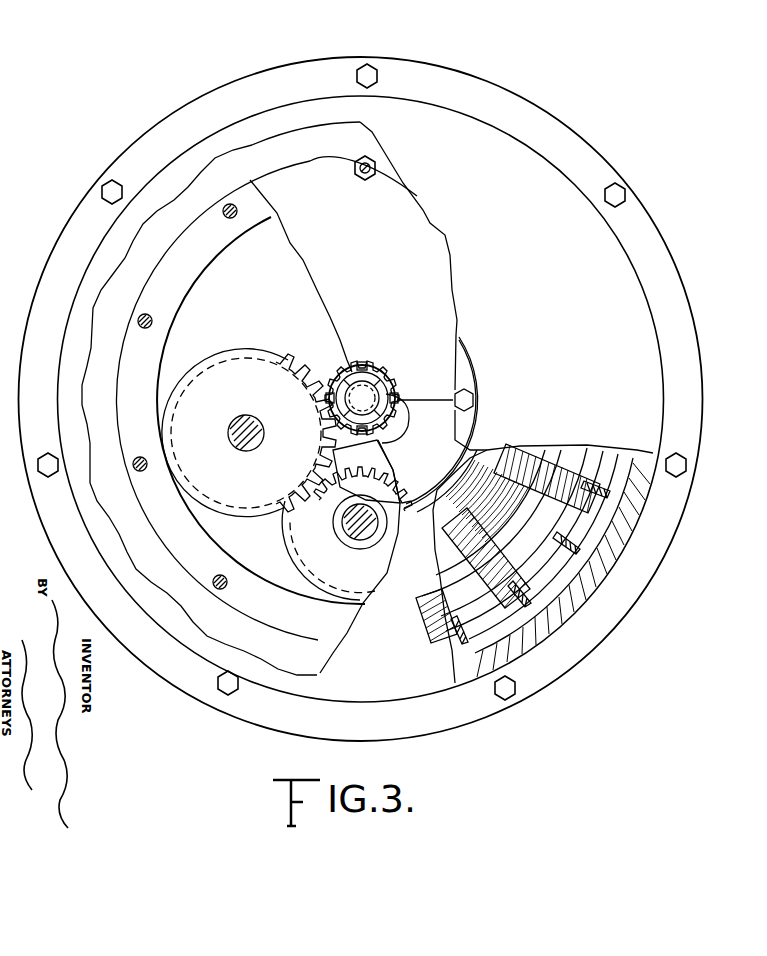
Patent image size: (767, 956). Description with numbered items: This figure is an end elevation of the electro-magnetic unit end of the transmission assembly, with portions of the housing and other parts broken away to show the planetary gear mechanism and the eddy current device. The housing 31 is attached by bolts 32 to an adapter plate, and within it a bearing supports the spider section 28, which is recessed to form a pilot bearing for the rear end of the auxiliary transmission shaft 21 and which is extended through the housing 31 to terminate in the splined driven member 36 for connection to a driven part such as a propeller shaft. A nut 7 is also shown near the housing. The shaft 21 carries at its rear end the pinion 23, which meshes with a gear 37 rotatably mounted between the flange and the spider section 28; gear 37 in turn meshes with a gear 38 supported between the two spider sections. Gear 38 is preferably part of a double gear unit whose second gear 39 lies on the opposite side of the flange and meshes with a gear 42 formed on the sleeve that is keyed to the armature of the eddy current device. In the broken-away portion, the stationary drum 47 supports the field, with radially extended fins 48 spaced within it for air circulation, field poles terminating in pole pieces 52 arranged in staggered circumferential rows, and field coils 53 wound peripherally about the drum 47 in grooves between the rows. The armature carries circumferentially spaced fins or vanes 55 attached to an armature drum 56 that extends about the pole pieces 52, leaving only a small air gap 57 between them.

The nut 7 is at (369, 170).
The auxiliary transmission shaft 21 is at (371, 364).
The pinion 23 is at (388, 442).
The spider section 28 is at (277, 243).
The housing 31 is at (293, 148).
The bolts 32 is at (117, 189).
The splined driven member 36 is at (374, 380).
The gear 37 is at (254, 368).
The gear 38 is at (307, 535).
The gear 39 is at (357, 488).
The gear 42 is at (369, 462).
The stationary drum 47 is at (513, 453).
The radially extended fins 48 is at (500, 452).
The pole pieces 52 is at (574, 470).
The field coils 53 is at (503, 510).
The fins or vanes 55 is at (530, 593).
The armature drum 56 is at (567, 513).
The air gap 57 is at (470, 620).